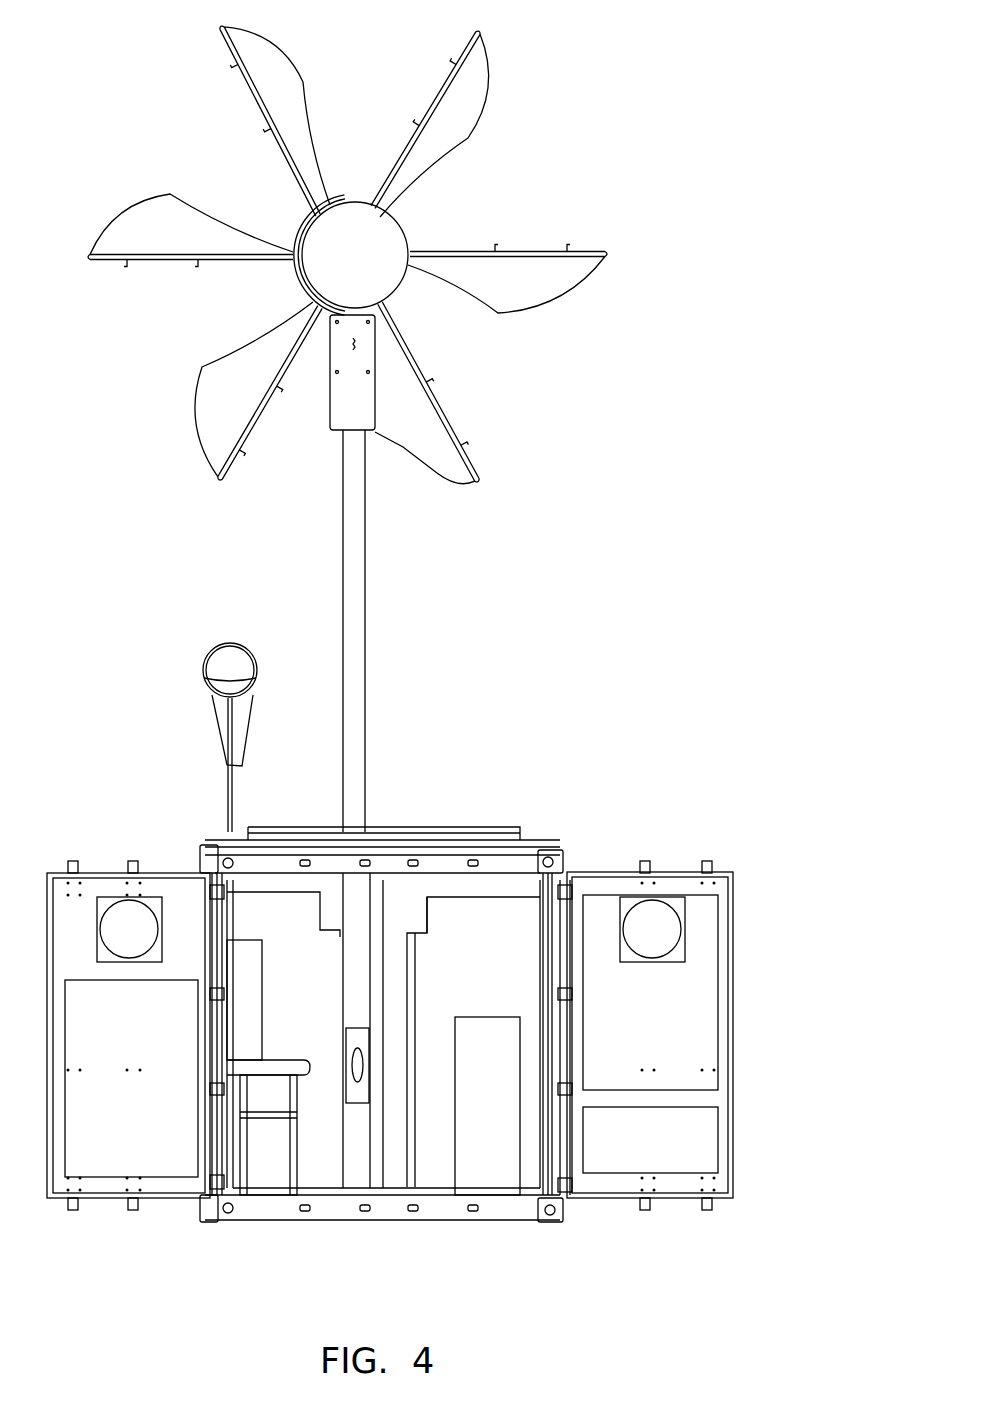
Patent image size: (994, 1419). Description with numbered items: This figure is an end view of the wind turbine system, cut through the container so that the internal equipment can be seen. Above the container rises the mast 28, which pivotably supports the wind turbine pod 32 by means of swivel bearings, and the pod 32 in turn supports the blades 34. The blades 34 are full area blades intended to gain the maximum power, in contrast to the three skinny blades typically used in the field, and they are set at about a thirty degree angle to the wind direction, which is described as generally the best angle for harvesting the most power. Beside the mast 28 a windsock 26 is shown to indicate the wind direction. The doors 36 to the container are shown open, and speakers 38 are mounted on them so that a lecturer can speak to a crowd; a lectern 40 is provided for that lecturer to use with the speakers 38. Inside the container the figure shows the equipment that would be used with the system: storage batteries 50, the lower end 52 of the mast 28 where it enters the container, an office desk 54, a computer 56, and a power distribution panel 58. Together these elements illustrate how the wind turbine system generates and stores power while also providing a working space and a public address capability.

The windsock 26 is at (248, 727).
The mast 28 is at (365, 592).
The wind turbine pod 32 is at (355, 248).
The blades 34 is at (443, 128).
The doors 36 is at (697, 972).
The speakers 38 is at (648, 928).
The lectern 40 is at (483, 1067).
The storage batteries 50 is at (500, 967).
The lower end of mast 52 is at (362, 1067).
The office desk 54 is at (287, 1070).
The computer 56 is at (340, 937).
The power distribution panel 58 is at (243, 988).